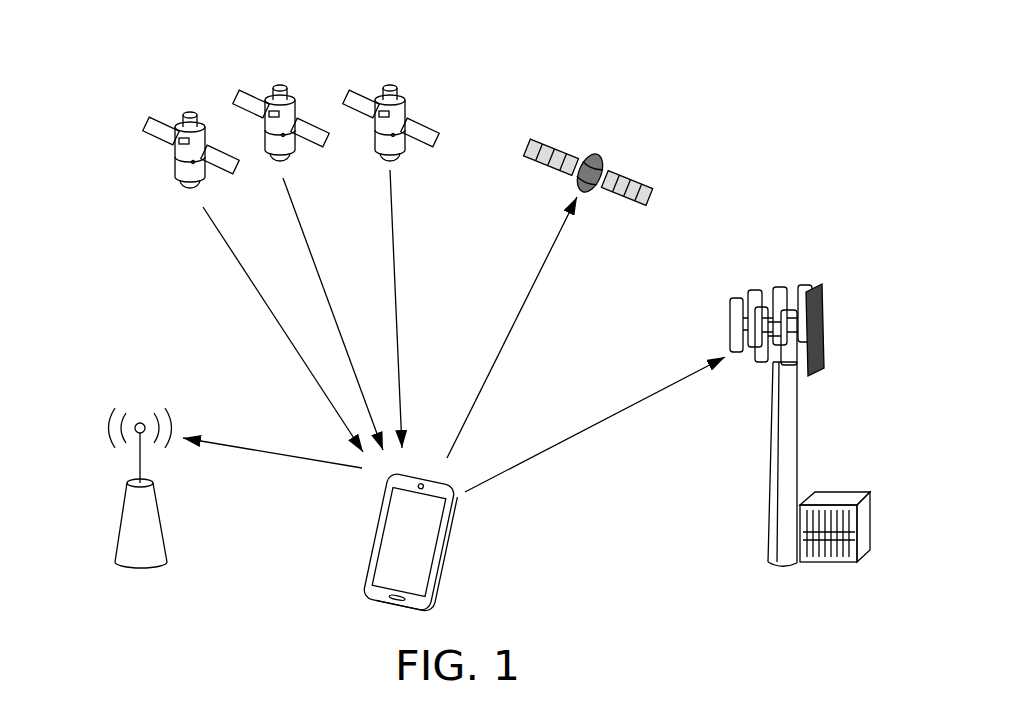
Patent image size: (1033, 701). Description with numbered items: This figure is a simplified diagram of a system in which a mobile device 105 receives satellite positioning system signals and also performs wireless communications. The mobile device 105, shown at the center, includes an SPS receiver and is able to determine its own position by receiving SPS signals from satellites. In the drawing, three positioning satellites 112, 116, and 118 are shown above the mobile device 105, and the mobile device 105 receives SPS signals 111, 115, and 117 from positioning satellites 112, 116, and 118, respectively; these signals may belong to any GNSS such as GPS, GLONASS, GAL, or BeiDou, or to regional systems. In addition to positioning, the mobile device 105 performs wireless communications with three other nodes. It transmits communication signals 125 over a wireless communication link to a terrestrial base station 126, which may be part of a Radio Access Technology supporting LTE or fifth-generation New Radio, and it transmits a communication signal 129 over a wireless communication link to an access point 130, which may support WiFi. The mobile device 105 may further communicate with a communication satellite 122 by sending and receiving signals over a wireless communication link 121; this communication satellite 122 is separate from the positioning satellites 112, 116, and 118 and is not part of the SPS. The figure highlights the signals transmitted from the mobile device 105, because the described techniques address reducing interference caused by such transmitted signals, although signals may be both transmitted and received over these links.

The mobile device 105 is at (452, 575).
The SPS signal 111 is at (247, 277).
The positioning satellite 112 is at (155, 123).
The SPS signal 115 is at (312, 258).
The positioning satellite 116 is at (238, 100).
The SPS signal 117 is at (393, 248).
The positioning satellite 118 is at (352, 90).
The wireless communication link 121 is at (553, 242).
The communication satellite 122 is at (622, 167).
The communication signals 125 is at (642, 400).
The base station 126 is at (812, 283).
The communication signal 129 is at (300, 457).
The access point 130 is at (118, 410).